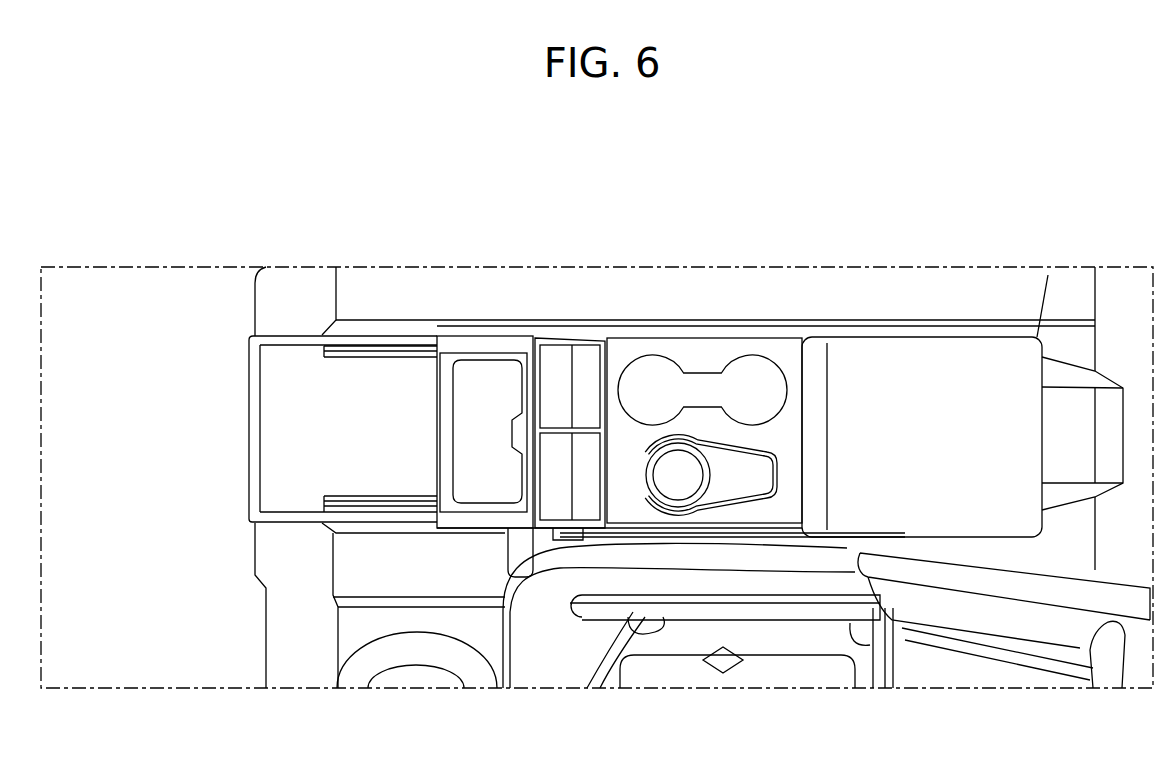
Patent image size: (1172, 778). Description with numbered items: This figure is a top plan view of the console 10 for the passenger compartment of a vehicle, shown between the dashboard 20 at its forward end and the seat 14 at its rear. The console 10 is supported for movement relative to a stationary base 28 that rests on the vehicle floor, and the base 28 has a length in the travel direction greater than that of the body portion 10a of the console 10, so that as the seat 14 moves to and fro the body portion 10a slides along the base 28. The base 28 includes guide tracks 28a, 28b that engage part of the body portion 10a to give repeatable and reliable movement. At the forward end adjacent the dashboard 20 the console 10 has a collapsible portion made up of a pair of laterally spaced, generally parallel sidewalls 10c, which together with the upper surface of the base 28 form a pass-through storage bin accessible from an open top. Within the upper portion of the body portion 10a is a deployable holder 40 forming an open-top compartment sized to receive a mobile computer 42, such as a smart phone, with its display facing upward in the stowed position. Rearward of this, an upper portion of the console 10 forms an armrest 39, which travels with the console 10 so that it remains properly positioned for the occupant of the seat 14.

The dashboard 20 is at (155, 268).
The console 10 is at (764, 250).
The body portion 10a is at (1048, 275).
The sidewalls 10c is at (292, 313).
The deployable holder 40 is at (493, 255).
The stationary base 28 is at (343, 436).
The guide track 28a is at (317, 517).
The guide track 28b is at (320, 340).
The mobile computer 42 is at (468, 445).
The armrest 39 is at (916, 451).
The seat 14 is at (940, 685).